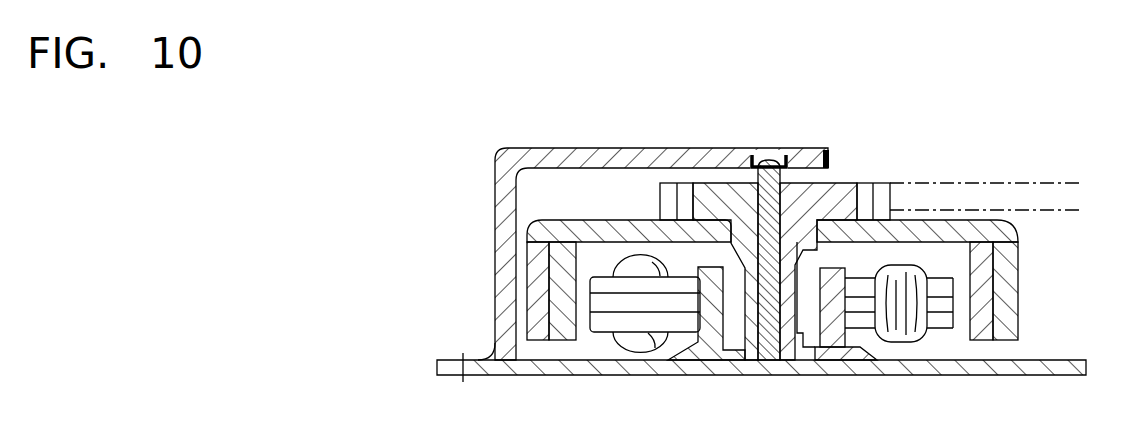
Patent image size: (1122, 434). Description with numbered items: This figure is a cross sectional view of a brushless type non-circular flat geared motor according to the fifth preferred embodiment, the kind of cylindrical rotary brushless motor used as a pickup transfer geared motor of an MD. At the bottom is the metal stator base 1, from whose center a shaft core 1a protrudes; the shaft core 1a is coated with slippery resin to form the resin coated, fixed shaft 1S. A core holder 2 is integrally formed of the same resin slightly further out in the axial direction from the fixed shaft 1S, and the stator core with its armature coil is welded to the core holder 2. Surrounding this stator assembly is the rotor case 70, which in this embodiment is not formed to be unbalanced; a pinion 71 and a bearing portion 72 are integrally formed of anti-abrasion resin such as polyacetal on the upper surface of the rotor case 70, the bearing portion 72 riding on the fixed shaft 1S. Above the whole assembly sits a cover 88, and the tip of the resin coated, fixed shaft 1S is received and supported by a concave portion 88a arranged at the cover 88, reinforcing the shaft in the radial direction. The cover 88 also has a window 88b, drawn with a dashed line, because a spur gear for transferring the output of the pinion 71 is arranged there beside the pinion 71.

The stator base 1 is at (1000, 368).
The shaft core 1a is at (773, 170).
The resin coated, fixed shaft 1S is at (827, 150).
The core holder 2 is at (820, 310).
The rotor case 70 is at (593, 227).
The pinion 71 is at (718, 200).
The bearing portion 72 is at (738, 270).
The cover 88 is at (502, 153).
The concave portion 88a is at (755, 152).
The window 88b is at (952, 172).